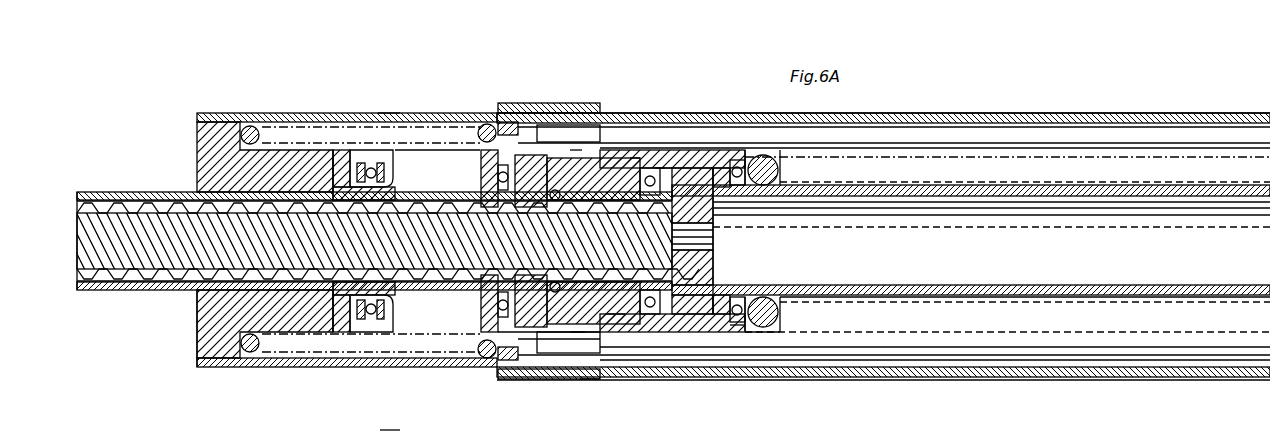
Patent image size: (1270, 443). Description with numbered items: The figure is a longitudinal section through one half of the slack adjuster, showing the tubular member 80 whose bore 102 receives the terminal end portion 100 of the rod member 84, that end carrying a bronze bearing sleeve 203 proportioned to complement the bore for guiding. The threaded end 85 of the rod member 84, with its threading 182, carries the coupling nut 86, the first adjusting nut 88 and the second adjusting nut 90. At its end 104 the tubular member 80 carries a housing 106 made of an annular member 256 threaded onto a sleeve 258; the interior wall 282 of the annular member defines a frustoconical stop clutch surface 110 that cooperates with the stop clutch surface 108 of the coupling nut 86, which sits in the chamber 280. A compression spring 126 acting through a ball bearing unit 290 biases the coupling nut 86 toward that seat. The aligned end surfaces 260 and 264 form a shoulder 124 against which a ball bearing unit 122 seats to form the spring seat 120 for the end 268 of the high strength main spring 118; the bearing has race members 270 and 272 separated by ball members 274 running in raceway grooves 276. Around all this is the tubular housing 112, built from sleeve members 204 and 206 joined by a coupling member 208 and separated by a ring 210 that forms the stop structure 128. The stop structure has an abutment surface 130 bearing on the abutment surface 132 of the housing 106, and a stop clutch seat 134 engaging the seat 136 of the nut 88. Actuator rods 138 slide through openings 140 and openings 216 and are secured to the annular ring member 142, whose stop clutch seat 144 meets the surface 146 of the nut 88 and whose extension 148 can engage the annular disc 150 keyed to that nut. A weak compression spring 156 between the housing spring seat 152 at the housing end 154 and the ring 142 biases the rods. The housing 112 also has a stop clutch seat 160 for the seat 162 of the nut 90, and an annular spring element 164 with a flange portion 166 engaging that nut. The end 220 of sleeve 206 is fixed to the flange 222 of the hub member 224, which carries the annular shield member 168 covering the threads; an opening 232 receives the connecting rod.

The tubular member 80 is at (1193, 296).
The rod member 84 is at (137, 212).
The threaded end of rod member 85 is at (418, 182).
The coupling nut 86 is at (638, 167).
The first adjusting nut 88 is at (540, 130).
The second adjusting nut 90 is at (350, 170).
The terminal end portion of rod 100 is at (716, 232).
The bore of tubular member 102 is at (1020, 290).
The end of tubular member 104 is at (692, 250).
The housing 106 is at (590, 373).
The stop clutch surface of coupling nut 108 is at (545, 343).
The stop clutch surface of housing 110 is at (645, 172).
The tubular housing 112 is at (1001, 110).
The main spring 118 is at (1114, 335).
The spring seat 120 is at (767, 327).
The ball bearing unit 122 is at (747, 337).
The shoulder 124 is at (750, 147).
The compression spring 126 is at (670, 170).
The stop structure 128 is at (533, 368).
The abutment surface 130 is at (593, 160).
The abutment surface of housing 132 is at (505, 368).
The stop clutch seat 134 is at (500, 323).
The stop clutch seat of adjusting nut 136 is at (627, 300).
The actuator rods 138 is at (1040, 137).
The openings of stop structure 140 is at (533, 167).
The annular ring member 142 is at (480, 128).
The stop clutch seat of ring 144 is at (515, 127).
The stop clutch surface of nut 146 is at (495, 160).
The extension of ring 148 is at (487, 360).
The annular disc 150 is at (490, 310).
The housing spring seat 152 is at (253, 128).
The housing end 154 is at (213, 132).
The compression spring 156 is at (300, 120).
The stop clutch seat of housing 160 is at (313, 365).
The stop clutch seat of second adjusting nut 162 is at (310, 335).
The annular spring element 164 is at (362, 167).
The flange portion 166 is at (388, 308).
The annular shield member 168 is at (107, 290).
The threading of rod member 182 is at (418, 200).
The bronze bearing sleeve 203 is at (672, 158).
The sleeve member 204 is at (905, 114).
The sleeve member 206 is at (390, 112).
The coupling member 208 is at (575, 150).
The ring 210 is at (557, 378).
The openings of ring 216 is at (557, 128).
The end of sleeve 220 is at (210, 367).
The flange of hub member 222 is at (200, 335).
The hub member 224 is at (212, 318).
The opening 232 is at (388, 435).
The annular member 256 is at (618, 314).
The sleeve 258 is at (690, 316).
The end surface of annular member 260 is at (737, 337).
The end surface of sleeve 264 is at (733, 297).
The end of spring 268 is at (783, 170).
The race member 270 is at (733, 160).
The race member 272 is at (760, 143).
The ball members 274 is at (716, 212).
The raceway grooves 276 is at (767, 284).
The chamber 280 is at (660, 167).
The interior wall 282 is at (577, 355).
The ball bearing unit 290 is at (653, 314).